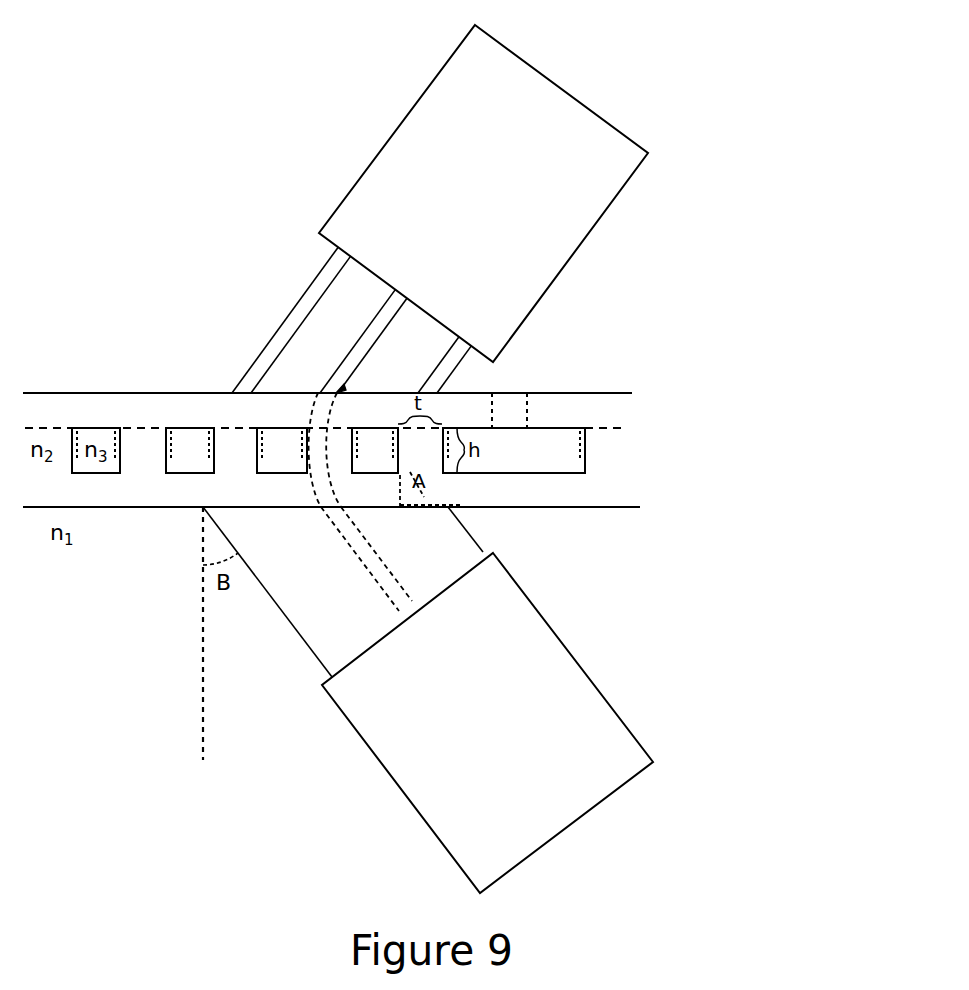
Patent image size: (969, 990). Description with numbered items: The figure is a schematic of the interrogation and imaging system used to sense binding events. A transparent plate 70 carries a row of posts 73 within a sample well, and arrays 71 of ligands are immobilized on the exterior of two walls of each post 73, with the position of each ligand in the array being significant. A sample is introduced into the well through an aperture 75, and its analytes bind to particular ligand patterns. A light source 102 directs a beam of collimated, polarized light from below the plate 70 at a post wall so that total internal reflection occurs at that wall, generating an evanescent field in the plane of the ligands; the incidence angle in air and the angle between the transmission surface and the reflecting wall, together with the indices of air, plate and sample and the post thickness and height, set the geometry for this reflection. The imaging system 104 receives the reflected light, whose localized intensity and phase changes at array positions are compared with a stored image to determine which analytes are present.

The plate 70 is at (582, 510).
The arrays of ligands 71 is at (212, 412).
The posts 73 is at (222, 461).
The aperture 75 is at (540, 380).
The light source 102 is at (600, 712).
The imaging system 104 is at (566, 128).